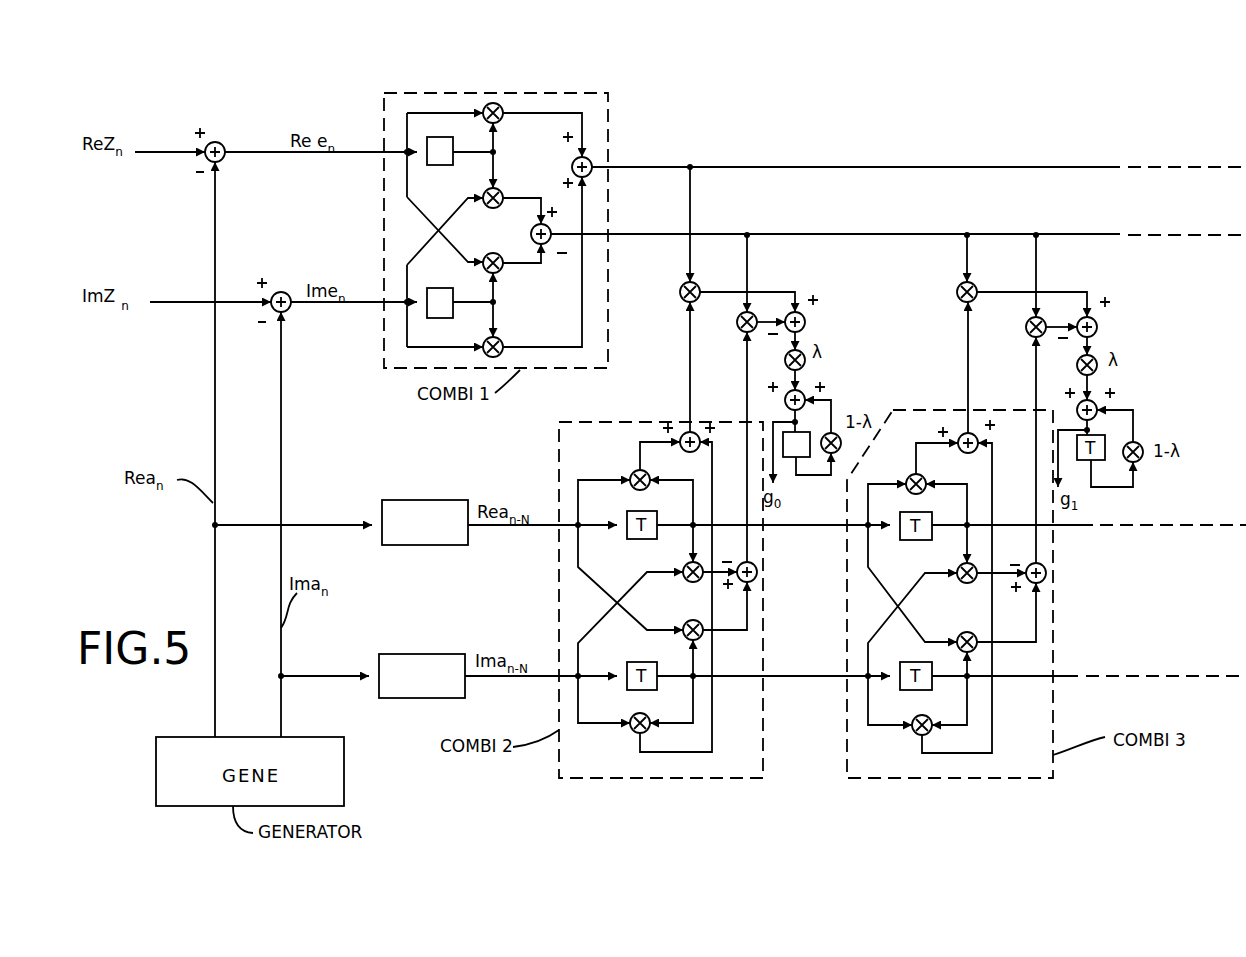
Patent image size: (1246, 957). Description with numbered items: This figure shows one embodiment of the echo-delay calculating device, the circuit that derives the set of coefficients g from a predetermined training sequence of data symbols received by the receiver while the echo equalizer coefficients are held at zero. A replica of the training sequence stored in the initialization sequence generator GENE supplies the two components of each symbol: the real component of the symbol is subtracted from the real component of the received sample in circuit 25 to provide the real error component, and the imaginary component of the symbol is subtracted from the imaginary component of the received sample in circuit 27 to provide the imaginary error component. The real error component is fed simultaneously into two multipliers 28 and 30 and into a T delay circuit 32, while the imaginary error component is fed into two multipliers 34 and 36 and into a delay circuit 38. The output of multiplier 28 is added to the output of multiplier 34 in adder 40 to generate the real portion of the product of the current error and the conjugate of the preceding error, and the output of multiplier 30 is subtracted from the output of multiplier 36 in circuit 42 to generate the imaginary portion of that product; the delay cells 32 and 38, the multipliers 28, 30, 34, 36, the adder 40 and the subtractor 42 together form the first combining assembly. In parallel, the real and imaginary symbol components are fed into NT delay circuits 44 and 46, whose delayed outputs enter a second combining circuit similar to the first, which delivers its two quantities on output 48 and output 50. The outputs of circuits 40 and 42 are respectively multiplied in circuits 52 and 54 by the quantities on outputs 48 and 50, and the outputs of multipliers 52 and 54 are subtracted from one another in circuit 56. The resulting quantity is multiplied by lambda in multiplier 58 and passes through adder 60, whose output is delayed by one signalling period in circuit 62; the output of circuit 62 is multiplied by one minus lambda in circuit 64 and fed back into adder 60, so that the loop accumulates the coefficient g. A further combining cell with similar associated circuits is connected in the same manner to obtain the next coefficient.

The subtracting circuit 25 is at (225, 143).
The subtracting circuit 27 is at (283, 292).
The multiplier 28 is at (500, 120).
The multiplier 30 is at (501, 270).
The T delay circuit 32 is at (446, 166).
The multiplier 34 is at (501, 340).
The multiplier 36 is at (495, 208).
The delay circuit 38 is at (433, 288).
The adder 40 is at (590, 160).
The subtractor 42 is at (548, 243).
The NT delay circuit 44 is at (423, 499).
The NT delay circuit 46 is at (425, 654).
The output of circuit COMBI 2 48 is at (688, 346).
The output of circuit COMBI 2 50 is at (747, 396).
The multiplier 52 is at (683, 285).
The multiplier 54 is at (756, 314).
The subtracting circuit 56 is at (806, 325).
The multiplier 58 is at (806, 362).
The adder 60 is at (803, 394).
The T delay circuit 62 is at (812, 460).
The multiplier 64 is at (841, 446).